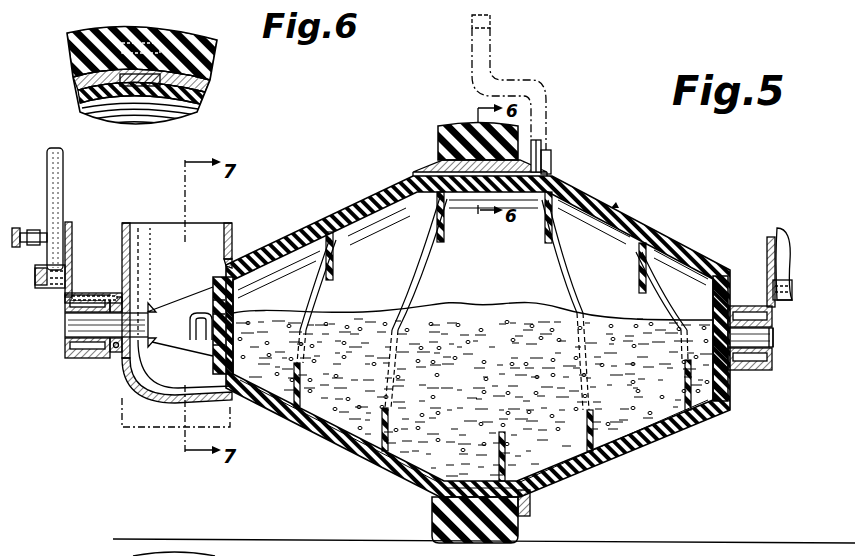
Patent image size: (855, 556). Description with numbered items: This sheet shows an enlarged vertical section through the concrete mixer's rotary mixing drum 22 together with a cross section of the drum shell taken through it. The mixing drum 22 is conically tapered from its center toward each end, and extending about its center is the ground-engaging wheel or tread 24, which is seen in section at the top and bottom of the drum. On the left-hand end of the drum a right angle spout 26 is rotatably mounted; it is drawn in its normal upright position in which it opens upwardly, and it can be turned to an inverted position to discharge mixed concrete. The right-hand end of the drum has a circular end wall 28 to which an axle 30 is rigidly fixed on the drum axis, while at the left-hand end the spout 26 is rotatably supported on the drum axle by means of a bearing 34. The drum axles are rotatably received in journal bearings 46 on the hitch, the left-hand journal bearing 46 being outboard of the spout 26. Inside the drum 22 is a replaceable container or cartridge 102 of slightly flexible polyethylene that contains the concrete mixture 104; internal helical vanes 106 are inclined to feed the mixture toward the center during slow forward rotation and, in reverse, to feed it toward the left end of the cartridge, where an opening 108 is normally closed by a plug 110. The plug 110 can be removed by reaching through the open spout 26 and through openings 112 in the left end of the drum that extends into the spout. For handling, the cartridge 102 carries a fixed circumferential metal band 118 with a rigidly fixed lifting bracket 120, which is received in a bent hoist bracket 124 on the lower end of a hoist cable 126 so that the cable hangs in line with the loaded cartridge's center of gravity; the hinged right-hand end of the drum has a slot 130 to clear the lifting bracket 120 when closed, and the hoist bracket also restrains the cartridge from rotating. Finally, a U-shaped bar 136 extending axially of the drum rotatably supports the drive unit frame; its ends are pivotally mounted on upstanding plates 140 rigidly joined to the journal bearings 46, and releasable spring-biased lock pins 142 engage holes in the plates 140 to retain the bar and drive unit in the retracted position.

The rotary mixing drum 22 is at (615, 205).
The ground-engaging wheel or tread 24 is at (514, 531).
The right angle spout 26 is at (233, 230).
The circular end wall 28 is at (727, 390).
The axle 30 is at (775, 342).
The bearing 34 is at (124, 356).
The journal bearings 46 is at (92, 358).
The replaceable container or cartridge 102 is at (370, 185).
The concrete mixture 104 is at (427, 457).
The internal helical vanes 106 is at (357, 208).
The opening 108 is at (180, 398).
The plug 110 is at (236, 303).
The openings 112 is at (177, 303).
The circumferential metal band 118 is at (522, 505).
The lifting bracket 120 is at (541, 146).
The hoist bracket 124 is at (548, 88).
The hoist cable 126 is at (490, 24).
The slot 130 is at (551, 165).
The U-shaped bar 136 is at (52, 171).
The upstanding plates 140 is at (70, 222).
The spring-biased lock pins 142 is at (38, 228).